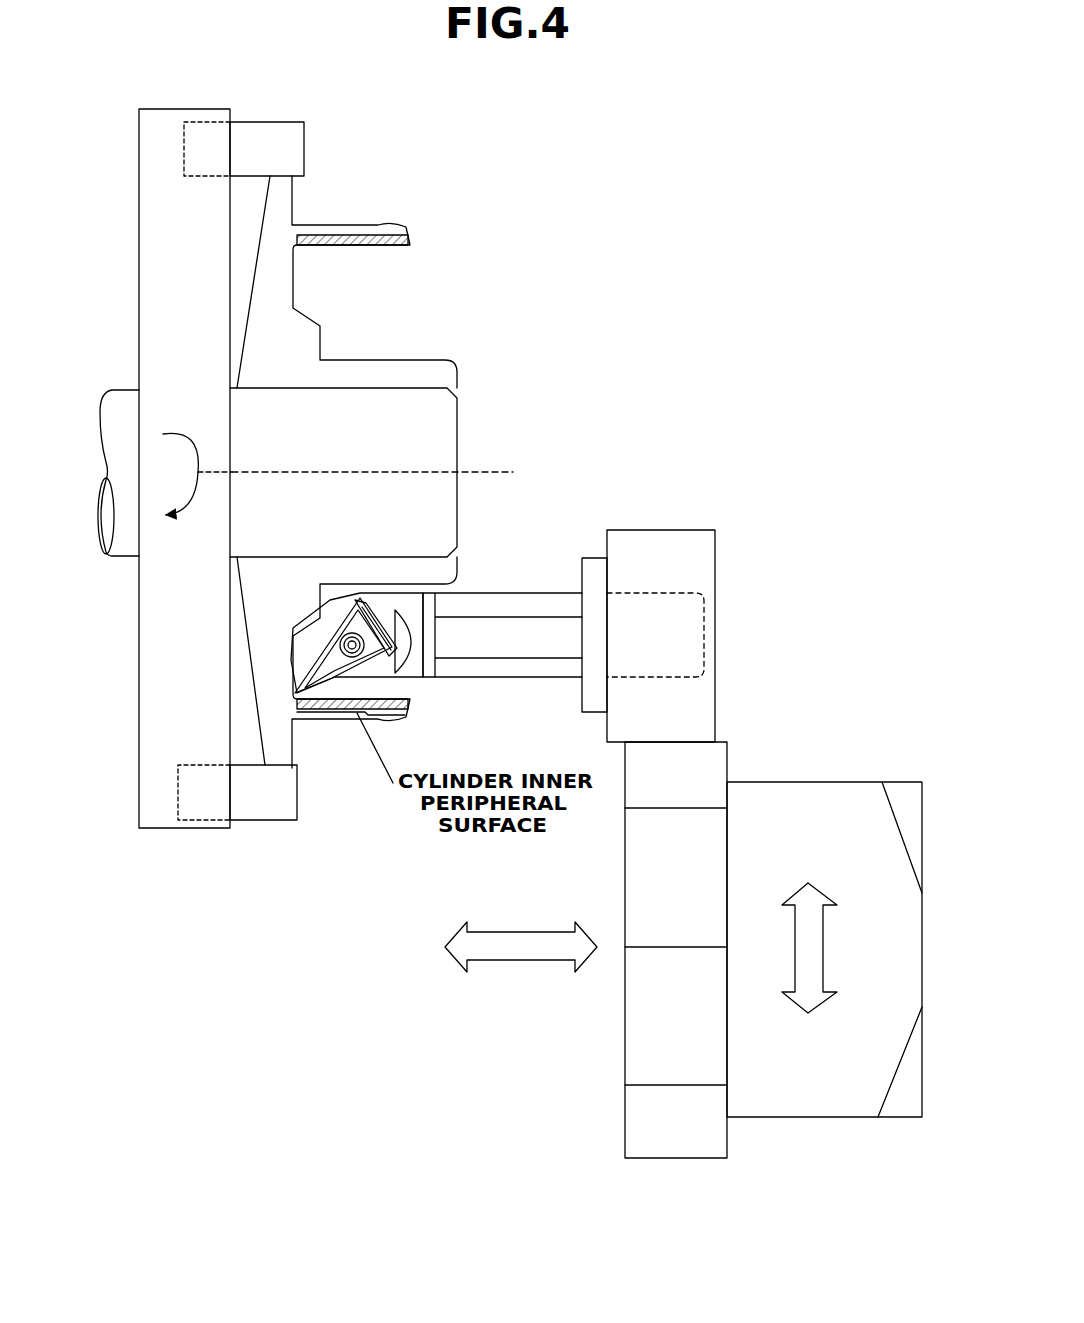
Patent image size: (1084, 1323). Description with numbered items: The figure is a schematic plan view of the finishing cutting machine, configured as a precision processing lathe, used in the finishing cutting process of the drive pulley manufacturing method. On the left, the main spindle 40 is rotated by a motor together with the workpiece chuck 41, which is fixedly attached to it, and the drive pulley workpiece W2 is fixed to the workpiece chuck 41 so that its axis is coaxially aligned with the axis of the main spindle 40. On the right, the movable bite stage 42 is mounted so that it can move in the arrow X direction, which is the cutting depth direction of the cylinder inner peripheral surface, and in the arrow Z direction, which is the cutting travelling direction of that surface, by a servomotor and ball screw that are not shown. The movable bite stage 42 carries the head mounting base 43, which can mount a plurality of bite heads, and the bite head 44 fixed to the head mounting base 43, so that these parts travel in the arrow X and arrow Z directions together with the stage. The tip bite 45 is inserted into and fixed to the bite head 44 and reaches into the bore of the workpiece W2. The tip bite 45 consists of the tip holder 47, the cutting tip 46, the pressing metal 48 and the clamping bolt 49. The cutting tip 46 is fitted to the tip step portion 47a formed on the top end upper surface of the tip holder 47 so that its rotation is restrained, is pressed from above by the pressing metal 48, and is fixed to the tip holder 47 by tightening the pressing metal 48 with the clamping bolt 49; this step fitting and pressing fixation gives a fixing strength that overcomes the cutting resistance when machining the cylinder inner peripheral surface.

The main spindle 40 is at (114, 561).
The workpiece chuck 41 is at (207, 838).
The movable bite stage 42 is at (784, 779).
The head mounting base 43 is at (683, 1163).
The bite head 44 is at (658, 526).
The tip bite 45 is at (491, 584).
The cutting tip 46 is at (307, 714).
The tip holder 47 is at (480, 640).
The tip step portion 47a is at (296, 688).
The pressing metal 48 is at (380, 657).
The clamping bolt 49 is at (320, 630).
The drive pulley workpiece W2 is at (374, 355).
The arrow X direction X is at (823, 930).
The arrow Z direction Z is at (527, 932).